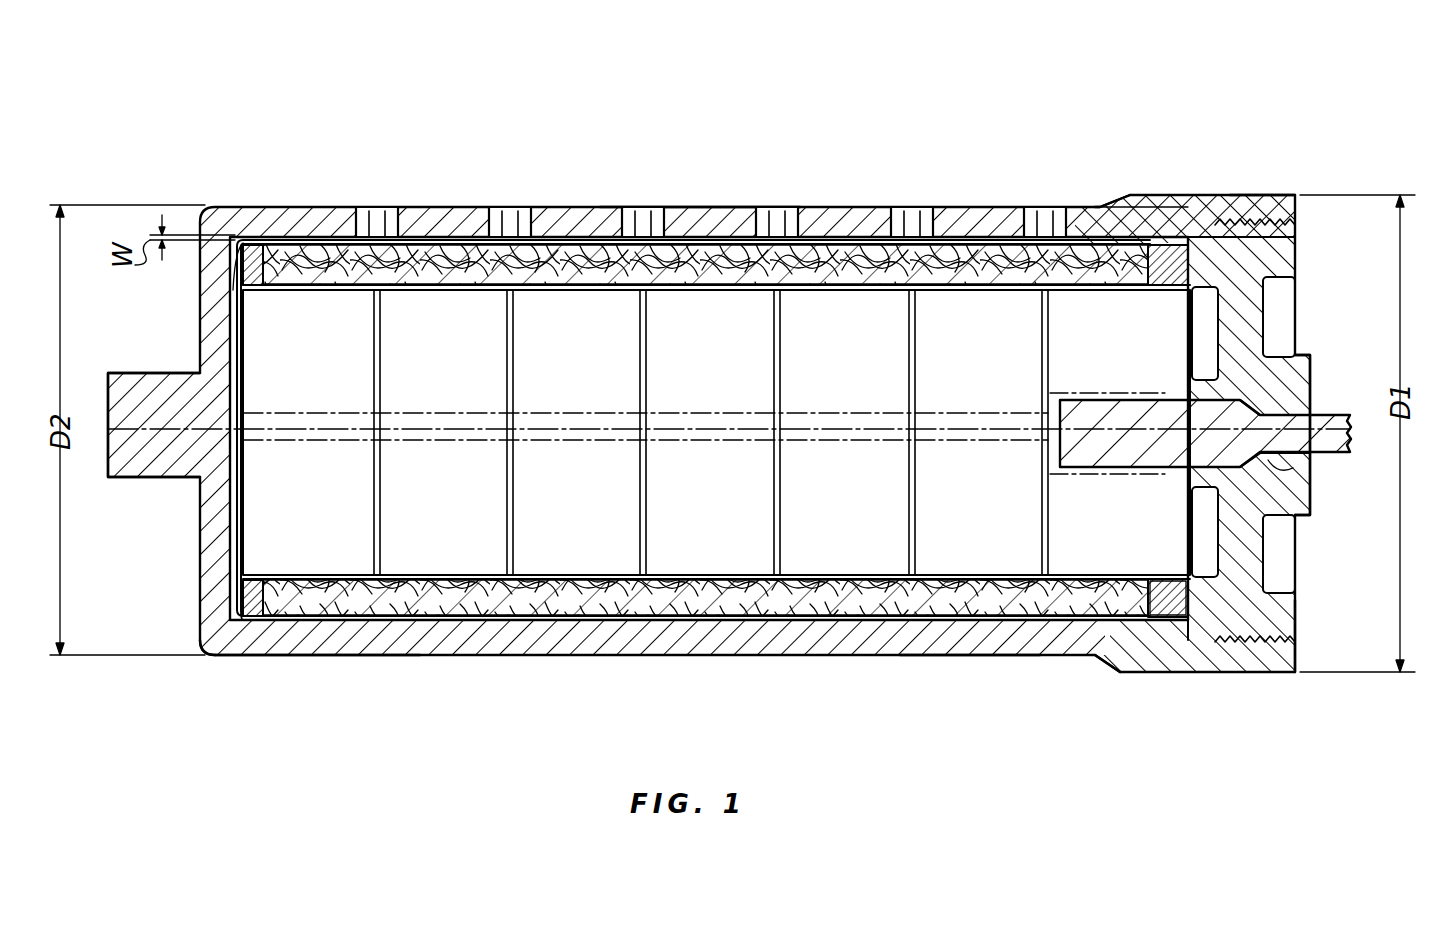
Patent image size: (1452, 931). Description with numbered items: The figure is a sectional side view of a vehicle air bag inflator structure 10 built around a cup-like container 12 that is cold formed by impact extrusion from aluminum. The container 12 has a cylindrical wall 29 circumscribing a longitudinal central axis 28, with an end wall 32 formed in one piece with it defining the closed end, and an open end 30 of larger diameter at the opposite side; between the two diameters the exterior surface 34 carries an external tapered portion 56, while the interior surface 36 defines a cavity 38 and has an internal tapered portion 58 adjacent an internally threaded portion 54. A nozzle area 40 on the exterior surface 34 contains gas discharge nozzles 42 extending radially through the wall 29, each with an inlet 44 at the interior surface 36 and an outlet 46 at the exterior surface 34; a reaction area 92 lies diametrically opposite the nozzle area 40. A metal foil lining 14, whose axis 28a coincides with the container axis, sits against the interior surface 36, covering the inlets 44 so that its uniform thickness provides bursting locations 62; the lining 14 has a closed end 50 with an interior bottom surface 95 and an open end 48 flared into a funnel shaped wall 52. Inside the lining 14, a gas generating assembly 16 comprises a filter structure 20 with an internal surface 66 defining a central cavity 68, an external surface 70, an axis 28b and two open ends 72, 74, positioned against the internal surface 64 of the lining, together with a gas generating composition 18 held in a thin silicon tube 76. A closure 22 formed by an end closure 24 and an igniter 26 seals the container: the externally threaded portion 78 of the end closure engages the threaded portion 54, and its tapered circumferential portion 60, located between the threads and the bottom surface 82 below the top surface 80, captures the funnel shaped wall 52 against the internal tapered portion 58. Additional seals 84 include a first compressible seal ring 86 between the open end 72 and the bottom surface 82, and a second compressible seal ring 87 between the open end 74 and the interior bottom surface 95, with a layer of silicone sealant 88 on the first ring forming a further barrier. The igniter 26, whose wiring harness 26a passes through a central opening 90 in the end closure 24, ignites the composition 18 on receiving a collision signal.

The vehicle air bag inflator structure 10 is at (1085, 108).
The container 12 is at (512, 657).
The lining 14 is at (655, 620).
The gas generating assembly 16 is at (605, 240).
The gas generating composition 18 is at (640, 520).
The filter structure 20 is at (942, 245).
The closure 22 is at (1226, 433).
The end closure 24 is at (1285, 325).
The igniter 26 is at (1212, 446).
The wiring harness 26a is at (1290, 472).
The longitudinal central axis 28 is at (103, 420).
The central longitudinal axis 28a is at (340, 430).
The central longitudinal axis 28b is at (470, 432).
The cylindrical wall 29 is at (478, 640).
The open end 30 is at (1302, 546).
The end wall 32 is at (236, 505).
The exterior surface 34 is at (325, 657).
The interior surface 36 is at (462, 245).
The cavity 38 is at (1210, 327).
The nozzle area 40 is at (690, 205).
The gas discharge nozzles 42 is at (376, 215).
The inlet 44 is at (388, 235).
The outlet 46 is at (515, 215).
The open end 48 is at (1200, 650).
The closed end 50 is at (205, 510).
The funnel shaped wall 52 is at (1195, 630).
The internally threaded portion 54 is at (1300, 270).
The external tapered portion 56 is at (1105, 672).
The internal tapered portion 58 is at (1265, 575).
The tapered circumferential portion 60 is at (1195, 240).
The bursting locations 62 is at (785, 215).
The internal surface 64 is at (918, 620).
The internal surface 66 is at (735, 610).
The central cavity 68 is at (845, 610).
The external surface 70 is at (400, 620).
The open end 72 is at (1165, 625).
The open end 74 is at (222, 630).
The tube 76 is at (795, 580).
The externally threaded portion 78 is at (1255, 195).
The top surface 80 is at (1300, 635).
The bottom surface 82 is at (1195, 650).
The additional seals 84 is at (1150, 240).
The first compressible seal ring 86 is at (1095, 212).
The second compressible seal ring 87 is at (250, 240).
The layer of silicone sealant 88 is at (1115, 230).
The central opening 90 is at (1308, 420).
The reaction area 92 is at (966, 660).
The interior bottom surface 95 is at (300, 300).